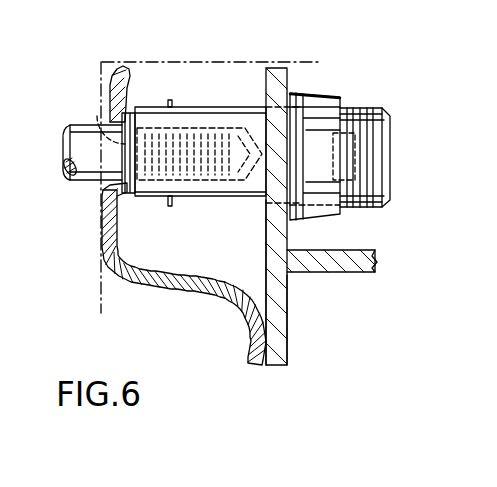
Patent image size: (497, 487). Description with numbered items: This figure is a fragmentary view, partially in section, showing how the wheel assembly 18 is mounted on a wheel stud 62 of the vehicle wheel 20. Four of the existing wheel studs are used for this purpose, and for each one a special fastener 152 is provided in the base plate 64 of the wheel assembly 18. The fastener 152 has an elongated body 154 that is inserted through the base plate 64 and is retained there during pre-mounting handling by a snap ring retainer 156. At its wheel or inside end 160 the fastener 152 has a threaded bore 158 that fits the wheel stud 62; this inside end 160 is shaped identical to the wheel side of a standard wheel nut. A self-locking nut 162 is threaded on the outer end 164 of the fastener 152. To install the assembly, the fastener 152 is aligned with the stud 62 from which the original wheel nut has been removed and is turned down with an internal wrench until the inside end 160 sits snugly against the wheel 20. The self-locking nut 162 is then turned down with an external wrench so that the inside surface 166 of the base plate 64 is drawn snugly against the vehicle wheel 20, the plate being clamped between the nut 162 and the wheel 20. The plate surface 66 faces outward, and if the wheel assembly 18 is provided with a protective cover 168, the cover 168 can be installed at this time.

The wheel assembly 18 is at (289, 62).
The vehicle wheel 20 is at (250, 352).
The wheel stud 62 is at (91, 184).
The base plate 64 is at (274, 366).
The plate outer surface 66 is at (288, 330).
The special fastener 152 is at (198, 204).
The elongated body 154 is at (203, 106).
The snap ring retainer 156 is at (176, 81).
The threaded bore 158 is at (99, 114).
The inside end 160 is at (119, 196).
The self-locking nut 162 is at (320, 94).
The outer end 164 is at (391, 122).
The inside surface 166 is at (265, 285).
The protective cover 168 is at (333, 274).